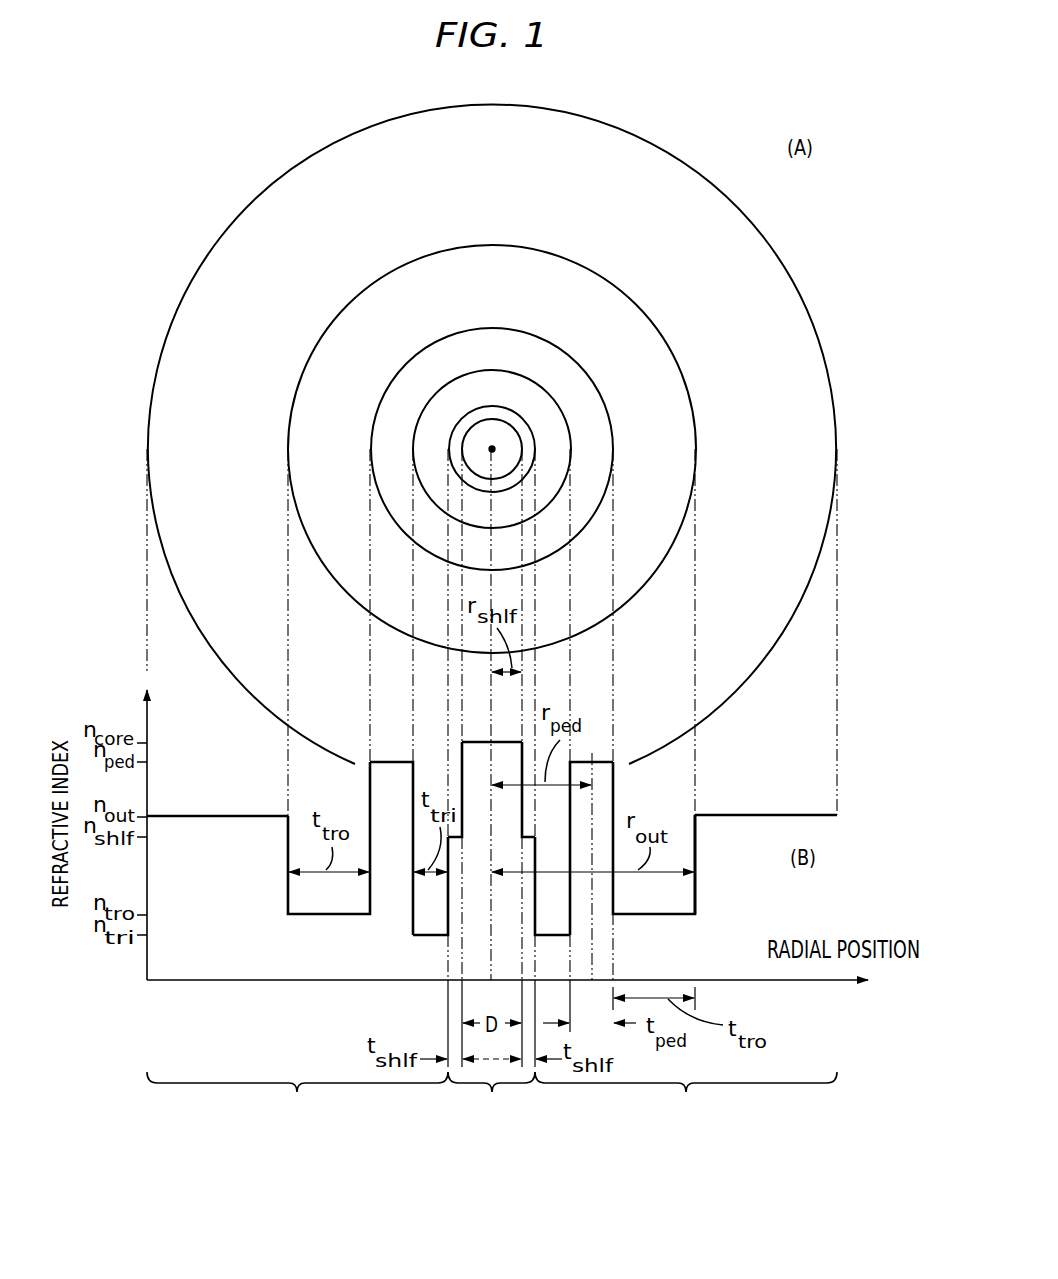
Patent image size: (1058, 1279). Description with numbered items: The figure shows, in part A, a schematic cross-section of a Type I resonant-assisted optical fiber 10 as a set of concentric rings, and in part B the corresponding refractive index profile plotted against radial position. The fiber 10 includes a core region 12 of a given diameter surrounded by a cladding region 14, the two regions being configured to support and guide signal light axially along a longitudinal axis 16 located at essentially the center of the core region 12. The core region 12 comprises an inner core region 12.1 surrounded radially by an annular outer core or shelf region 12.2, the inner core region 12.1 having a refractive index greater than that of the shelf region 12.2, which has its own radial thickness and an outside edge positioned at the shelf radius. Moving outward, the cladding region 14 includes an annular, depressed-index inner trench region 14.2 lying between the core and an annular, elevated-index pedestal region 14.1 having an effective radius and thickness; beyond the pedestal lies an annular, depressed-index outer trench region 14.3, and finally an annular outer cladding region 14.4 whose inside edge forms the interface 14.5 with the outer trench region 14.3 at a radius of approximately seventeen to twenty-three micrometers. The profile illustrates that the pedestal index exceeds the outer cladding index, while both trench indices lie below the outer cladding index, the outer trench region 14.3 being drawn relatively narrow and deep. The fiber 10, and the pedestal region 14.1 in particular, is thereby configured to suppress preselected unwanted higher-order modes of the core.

In FIG. 1A, the optical fiber 10 is at (510, 434).
In FIG. 1B, the core region 12 is at (491, 1096).
In FIG. 1A, the inner core region 12.1 is at (473, 450).
In FIG. 1B, the inner core region 12.1 is at (473, 967).
In FIG. 1A, the shelf region 12.2 is at (522, 426).
In FIG. 1B, the shelf region 12.2 is at (527, 928).
In FIG. 1B, the cladding region 14 is at (492, 1096).
In FIG. 1A, the pedestal region 14.1 is at (597, 441).
In FIG. 1B, the pedestal region 14.1 is at (383, 794).
In FIG. 1B, the inner trench region 14.2 is at (420, 905).
In FIG. 1B, the outer trench region 14.3 is at (326, 906).
In FIG. 1A, the outer cladding region 14.4 is at (798, 316).
In FIG. 1B, the outer cladding region 14.4 is at (210, 815).
In FIG. 1B, the interface 14.5 is at (696, 892).
In FIG. 1A, the longitudinal axis 16 is at (483, 448).